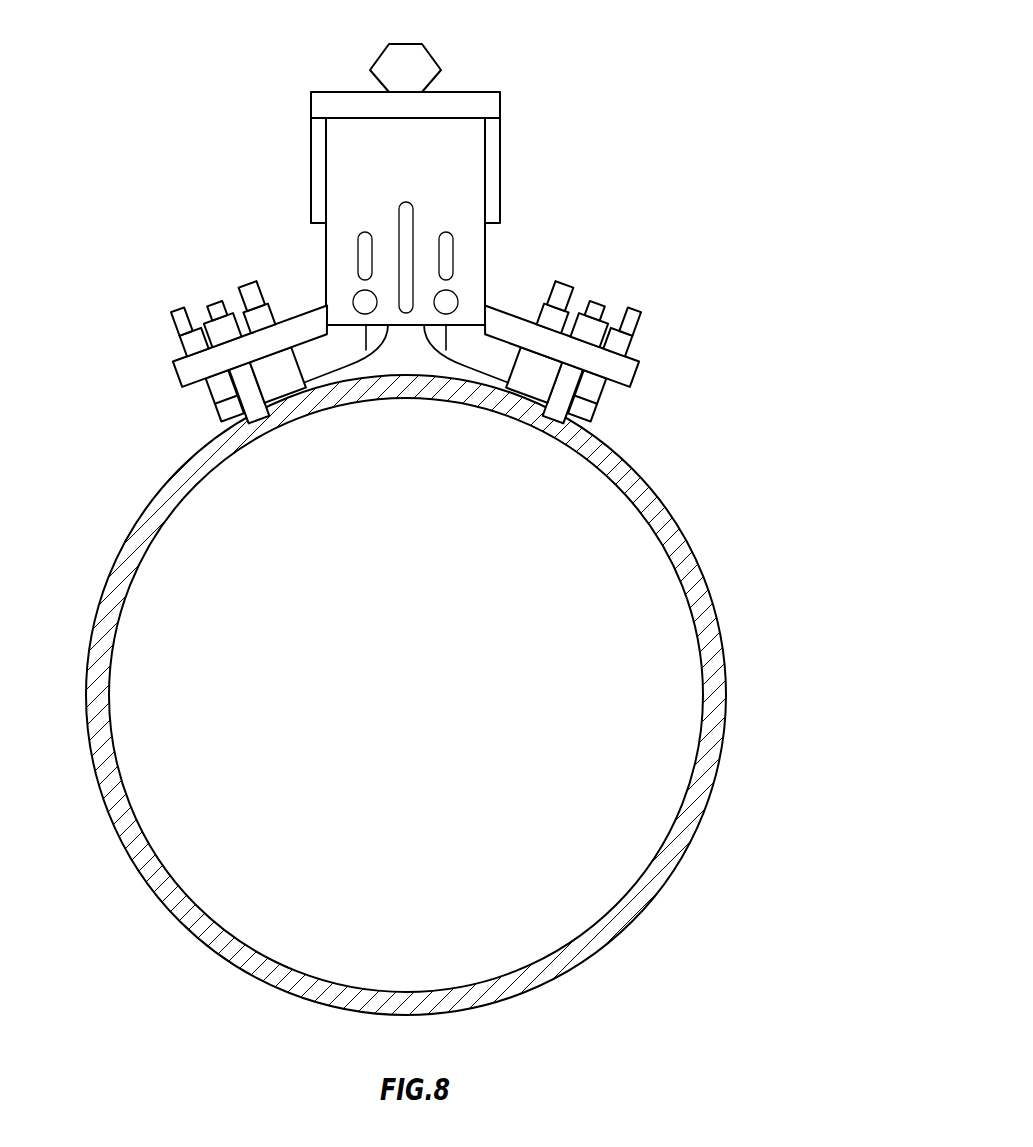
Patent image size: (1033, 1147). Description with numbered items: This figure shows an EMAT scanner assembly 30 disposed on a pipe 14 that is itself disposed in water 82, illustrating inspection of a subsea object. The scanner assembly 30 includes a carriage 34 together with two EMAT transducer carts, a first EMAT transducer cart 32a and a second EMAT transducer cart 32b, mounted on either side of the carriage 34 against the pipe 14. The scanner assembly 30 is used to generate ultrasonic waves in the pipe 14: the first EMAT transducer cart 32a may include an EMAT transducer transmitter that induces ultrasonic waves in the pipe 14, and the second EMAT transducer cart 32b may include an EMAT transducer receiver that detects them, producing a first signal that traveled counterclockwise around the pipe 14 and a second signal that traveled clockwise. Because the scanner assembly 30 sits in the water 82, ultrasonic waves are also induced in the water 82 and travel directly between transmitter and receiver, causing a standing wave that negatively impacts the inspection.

The EMAT scanner assembly 30 is at (393, 225).
The carriage 34 is at (492, 242).
The first EMAT transducer cart 32a is at (208, 402).
The second EMAT transducer cart 32b is at (602, 403).
The pipe 14 is at (697, 568).
The water 82 is at (789, 513).